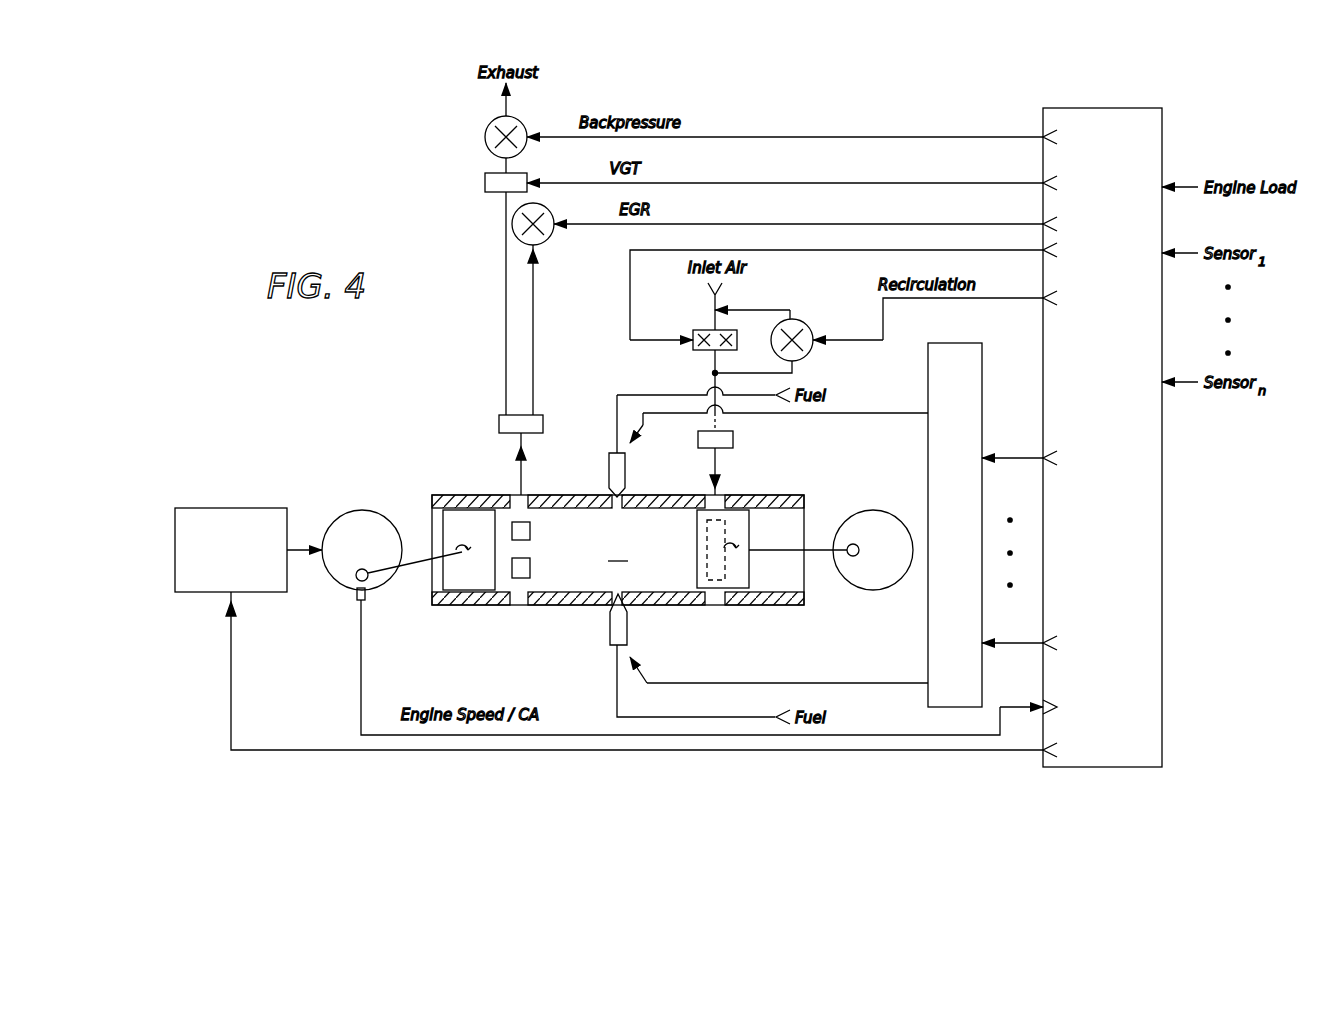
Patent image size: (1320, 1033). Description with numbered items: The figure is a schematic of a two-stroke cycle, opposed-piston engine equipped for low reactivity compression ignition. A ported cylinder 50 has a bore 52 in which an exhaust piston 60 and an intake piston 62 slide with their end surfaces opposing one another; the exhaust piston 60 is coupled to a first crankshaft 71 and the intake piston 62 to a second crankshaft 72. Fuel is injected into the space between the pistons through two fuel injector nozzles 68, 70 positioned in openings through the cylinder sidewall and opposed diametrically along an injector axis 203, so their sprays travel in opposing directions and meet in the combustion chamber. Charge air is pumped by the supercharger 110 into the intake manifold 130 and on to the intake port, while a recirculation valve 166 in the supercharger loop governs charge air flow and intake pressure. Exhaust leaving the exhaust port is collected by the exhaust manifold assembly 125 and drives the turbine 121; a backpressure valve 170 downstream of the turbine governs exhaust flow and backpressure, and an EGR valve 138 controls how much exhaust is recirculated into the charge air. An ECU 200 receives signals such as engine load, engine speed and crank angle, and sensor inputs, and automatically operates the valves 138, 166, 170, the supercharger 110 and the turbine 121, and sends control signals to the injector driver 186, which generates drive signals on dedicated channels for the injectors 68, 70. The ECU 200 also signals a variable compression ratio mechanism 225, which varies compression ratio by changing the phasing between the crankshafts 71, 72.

The ECU 200 is at (1120, 108).
The backpressure valve 170 is at (486, 133).
The turbine 121 is at (485, 182).
The EGR valve 138 is at (548, 240).
The exhaust manifold assembly 125 is at (499, 424).
The supercharger 110 is at (702, 350).
The recirculation valve 166 is at (800, 320).
The fuel injector nozzle 68 is at (625, 468).
The intake manifold 130 is at (733, 440).
The ported cylinder 50 is at (642, 600).
The bore 52 is at (618, 551).
The exhaust piston 60 is at (463, 577).
The intake piston 62 is at (742, 530).
The fuel injector nozzle 70 is at (610, 630).
The crankshaft 71 is at (342, 513).
The crankshaft 72 is at (870, 590).
The injector axis 203 is at (357, 597).
The variable compression ratio mechanism 225 is at (238, 508).
The injector driver 186 is at (982, 383).